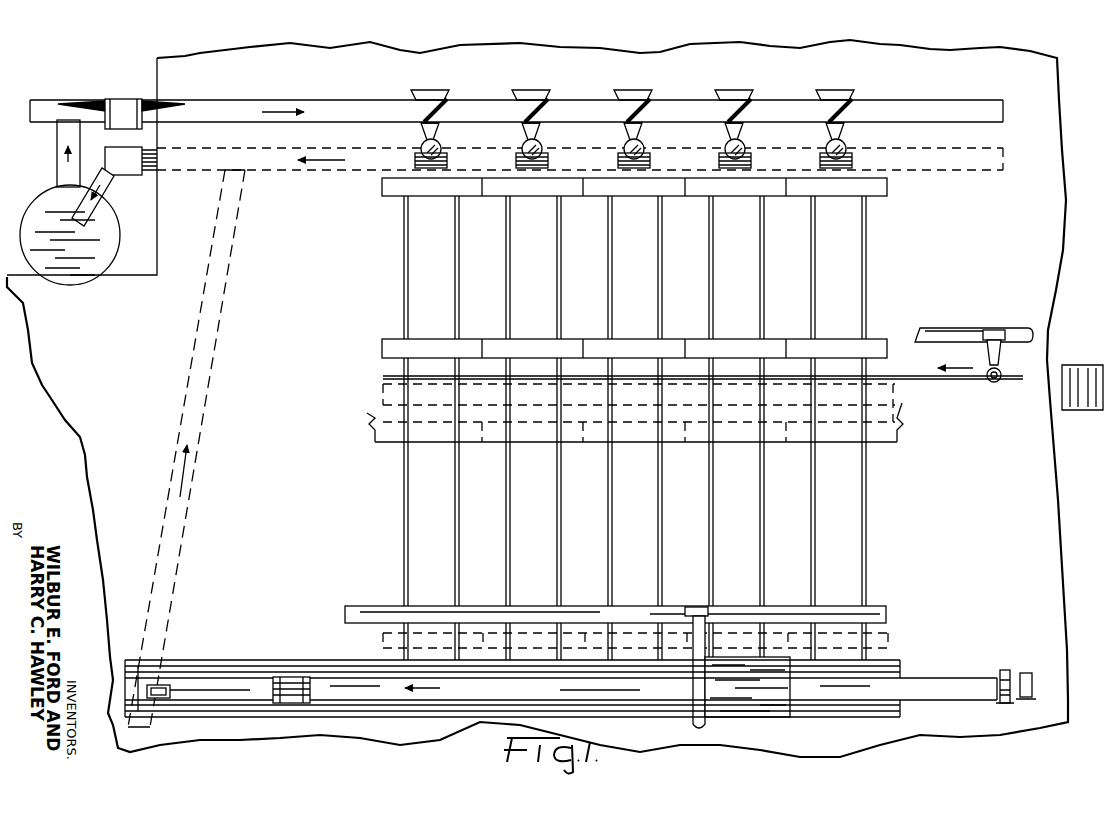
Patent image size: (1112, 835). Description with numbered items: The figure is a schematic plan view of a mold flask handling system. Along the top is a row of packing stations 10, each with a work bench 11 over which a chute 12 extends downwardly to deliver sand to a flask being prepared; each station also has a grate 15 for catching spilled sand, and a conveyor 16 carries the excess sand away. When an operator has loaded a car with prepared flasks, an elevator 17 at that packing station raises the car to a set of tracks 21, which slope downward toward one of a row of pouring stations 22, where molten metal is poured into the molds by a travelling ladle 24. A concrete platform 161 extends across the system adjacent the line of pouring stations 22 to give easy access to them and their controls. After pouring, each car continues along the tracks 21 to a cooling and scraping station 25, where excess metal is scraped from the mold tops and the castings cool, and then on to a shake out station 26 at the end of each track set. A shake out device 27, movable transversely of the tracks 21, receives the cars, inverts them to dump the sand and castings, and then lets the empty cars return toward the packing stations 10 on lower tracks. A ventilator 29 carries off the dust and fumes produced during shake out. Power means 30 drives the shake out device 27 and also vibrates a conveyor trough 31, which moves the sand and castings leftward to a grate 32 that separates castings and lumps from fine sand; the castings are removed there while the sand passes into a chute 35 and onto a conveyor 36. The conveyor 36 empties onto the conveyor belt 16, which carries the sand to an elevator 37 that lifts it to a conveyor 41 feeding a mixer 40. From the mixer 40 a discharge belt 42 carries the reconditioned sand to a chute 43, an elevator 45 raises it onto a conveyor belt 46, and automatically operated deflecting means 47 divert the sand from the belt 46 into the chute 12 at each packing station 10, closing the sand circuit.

The packing station 10 is at (418, 133).
The work bench 11 is at (441, 147).
The chute 12 is at (439, 125).
The grate 15 is at (414, 160).
The conveyor 16 is at (347, 171).
The concrete platform 161 is at (390, 397).
The elevator 17 is at (495, 199).
The tracks 21 is at (454, 263).
The pouring station 22 is at (496, 336).
The travelling ladle 24 is at (1012, 351).
The cooling and scraping station 25 is at (467, 414).
The shake out station 26 is at (888, 640).
The shake out device 27 is at (769, 723).
The ventilator 29 is at (372, 618).
The power means 30 is at (1031, 680).
The conveyor trough 31 is at (932, 680).
The grate 32 is at (290, 680).
The chute 35 is at (166, 688).
The conveyor 36 is at (178, 515).
The elevator 37 is at (124, 175).
The mixer 40 is at (107, 215).
The conveyor 41 is at (100, 173).
The discharge belt 42 is at (67, 130).
The chute 43 is at (50, 112).
The elevator 45 is at (125, 107).
The conveyor belt 46 is at (253, 108).
The deflecting means 47 is at (516, 118).